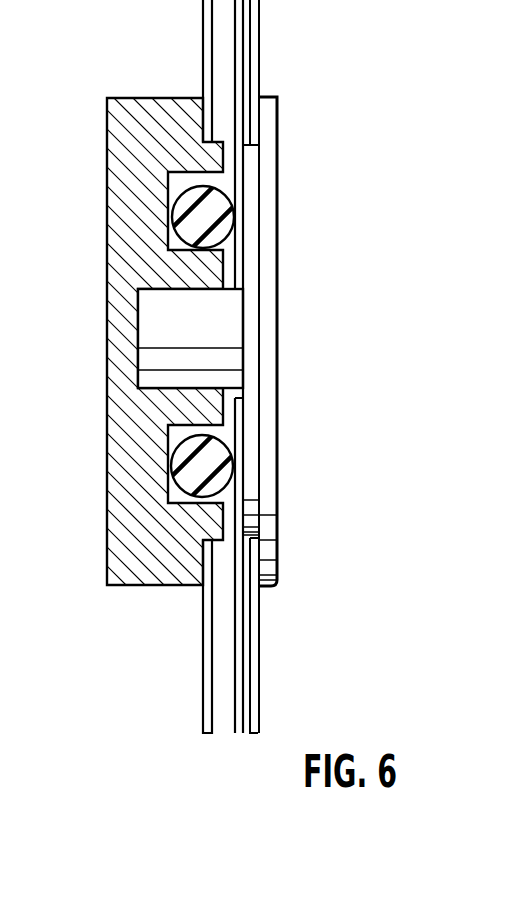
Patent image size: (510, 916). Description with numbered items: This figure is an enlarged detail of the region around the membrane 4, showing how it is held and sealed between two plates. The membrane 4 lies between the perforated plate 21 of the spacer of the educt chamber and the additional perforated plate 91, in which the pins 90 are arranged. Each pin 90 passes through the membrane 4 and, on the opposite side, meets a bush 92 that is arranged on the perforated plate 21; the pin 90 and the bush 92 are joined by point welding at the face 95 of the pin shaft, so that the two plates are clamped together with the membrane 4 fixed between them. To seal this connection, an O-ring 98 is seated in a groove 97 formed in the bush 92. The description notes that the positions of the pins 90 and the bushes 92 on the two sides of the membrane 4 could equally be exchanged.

The membrane 4 is at (244, 182).
The perforated plate 21 is at (202, 68).
The pin 90 is at (278, 280).
The additional perforated plate 91 is at (262, 25).
The bush 92 is at (108, 252).
The face of the pin shaft 95 is at (138, 354).
The groove 97 is at (172, 183).
The O-ring 98 is at (215, 465).